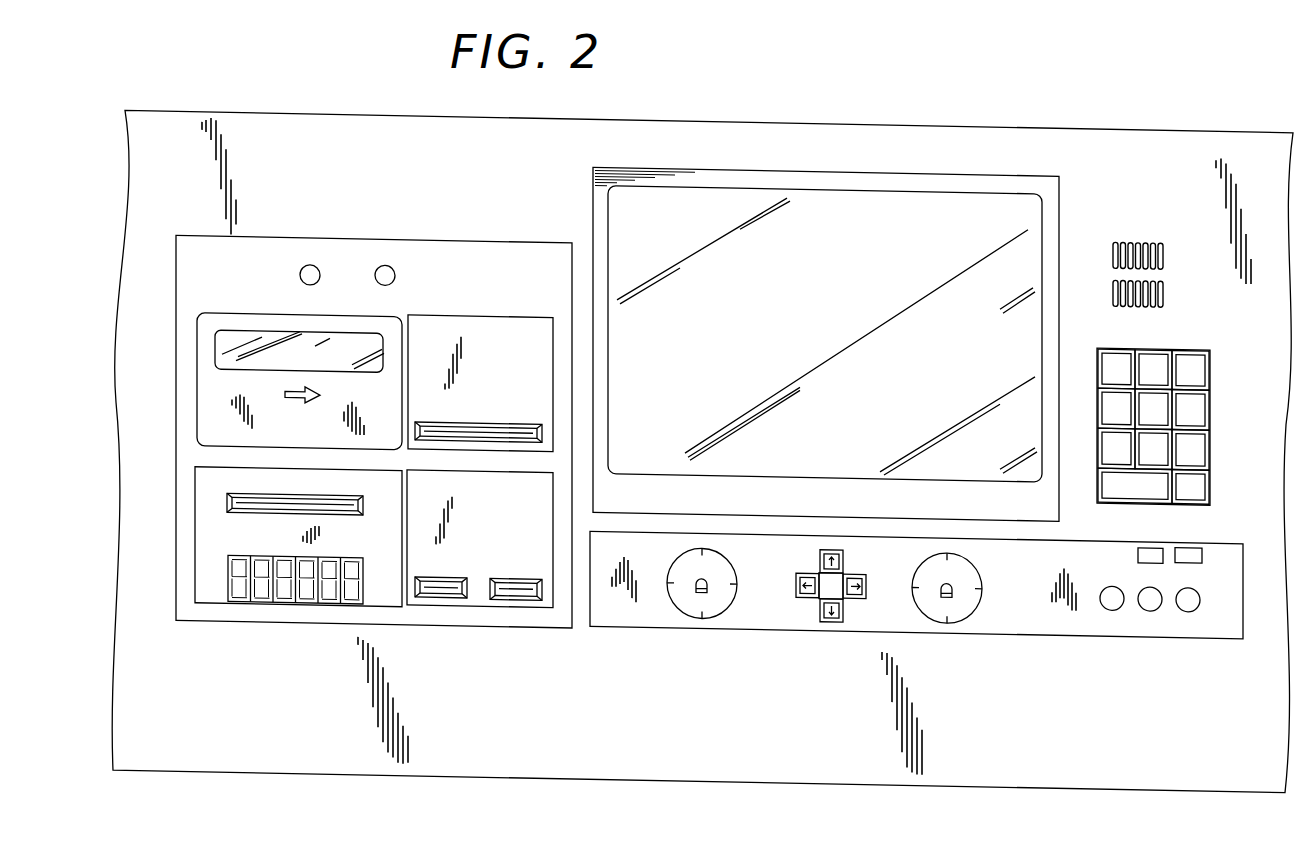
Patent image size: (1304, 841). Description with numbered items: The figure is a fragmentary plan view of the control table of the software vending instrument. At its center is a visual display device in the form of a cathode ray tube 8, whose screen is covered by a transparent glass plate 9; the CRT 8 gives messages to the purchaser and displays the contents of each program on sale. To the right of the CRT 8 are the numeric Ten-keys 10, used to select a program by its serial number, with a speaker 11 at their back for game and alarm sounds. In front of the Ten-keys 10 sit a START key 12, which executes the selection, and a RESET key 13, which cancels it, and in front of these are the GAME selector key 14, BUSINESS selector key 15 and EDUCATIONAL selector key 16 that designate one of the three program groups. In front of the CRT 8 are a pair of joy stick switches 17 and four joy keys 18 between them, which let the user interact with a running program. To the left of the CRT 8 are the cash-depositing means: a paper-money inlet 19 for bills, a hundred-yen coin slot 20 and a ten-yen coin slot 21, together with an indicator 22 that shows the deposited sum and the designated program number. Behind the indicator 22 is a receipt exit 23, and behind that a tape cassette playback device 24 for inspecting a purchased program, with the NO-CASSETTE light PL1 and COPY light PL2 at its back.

The cathode ray tube 8 is at (893, 193).
The transparent glass plate 9 is at (791, 161).
The numeric Ten-keys 10 is at (1201, 349).
The speaker 11 is at (1164, 270).
The START key 12 is at (1150, 526).
The RESET key 13 is at (1190, 525).
The GAME selector key 14 is at (1112, 589).
The BUSINESS selector key 15 is at (1150, 589).
The EDUCATIONAL selector key 16 is at (1188, 589).
The joy stick switches 17 is at (705, 577).
The joy keys 18 is at (843, 546).
The paper-money inlet 19 is at (496, 420).
The 100-yen coin slot 20 is at (443, 591).
The 10-yen coin slot 21 is at (517, 591).
The indicator 22 is at (310, 594).
The receipt exit 23 is at (228, 499).
The tape cassette playback device 24 is at (208, 402).
The NO-CASSETTE light PL1 is at (310, 259).
The COPY light PL2 is at (386, 258).